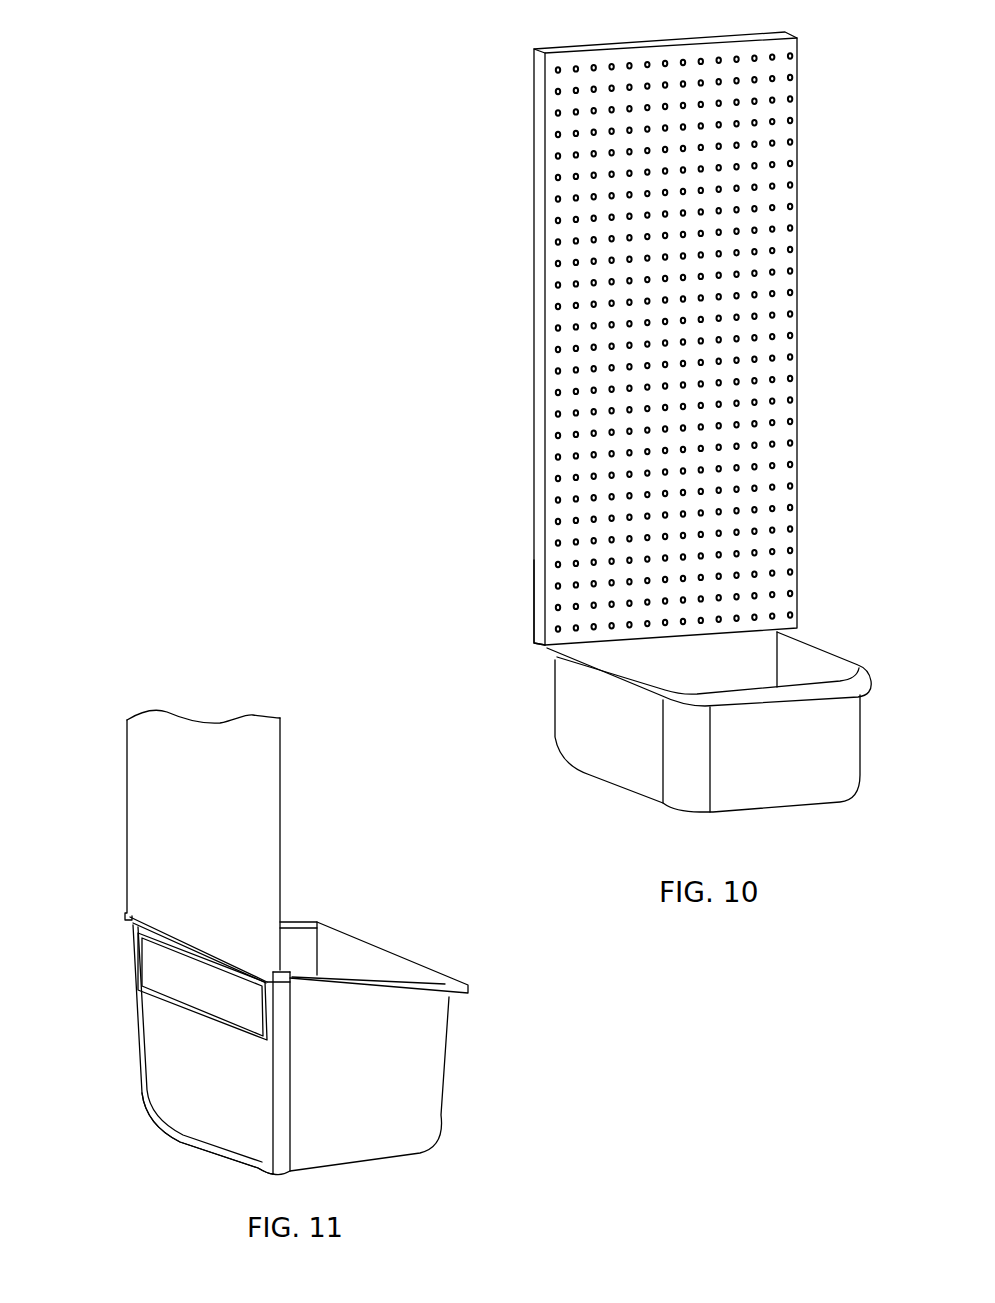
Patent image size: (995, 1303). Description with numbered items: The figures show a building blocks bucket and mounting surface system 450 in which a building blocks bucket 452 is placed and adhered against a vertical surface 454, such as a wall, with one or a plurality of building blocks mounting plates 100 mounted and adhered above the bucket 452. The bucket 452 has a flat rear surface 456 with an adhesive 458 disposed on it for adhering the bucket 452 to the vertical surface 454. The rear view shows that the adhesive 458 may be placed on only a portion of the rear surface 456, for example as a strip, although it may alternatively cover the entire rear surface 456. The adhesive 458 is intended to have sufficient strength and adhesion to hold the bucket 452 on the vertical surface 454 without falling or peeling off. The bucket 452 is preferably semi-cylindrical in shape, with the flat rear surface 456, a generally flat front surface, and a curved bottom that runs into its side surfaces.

In FIG. 10, the building blocks bucket and mounting surface system 450 is at (460, 130).
In FIG. 10, the building blocks mounting plate 100 is at (563, 467).
In FIG. 11, the building blocks mounting plate 100 is at (140, 800).
In FIG. 10, the vertical surface 454 is at (533, 585).
In FIG. 10, the building blocks bucket 452 is at (607, 770).
In FIG. 11, the building blocks bucket 452 is at (388, 1138).
In FIG. 11, the flat rear surface 456 is at (217, 1128).
In FIG. 11, the adhesive 458 is at (152, 969).